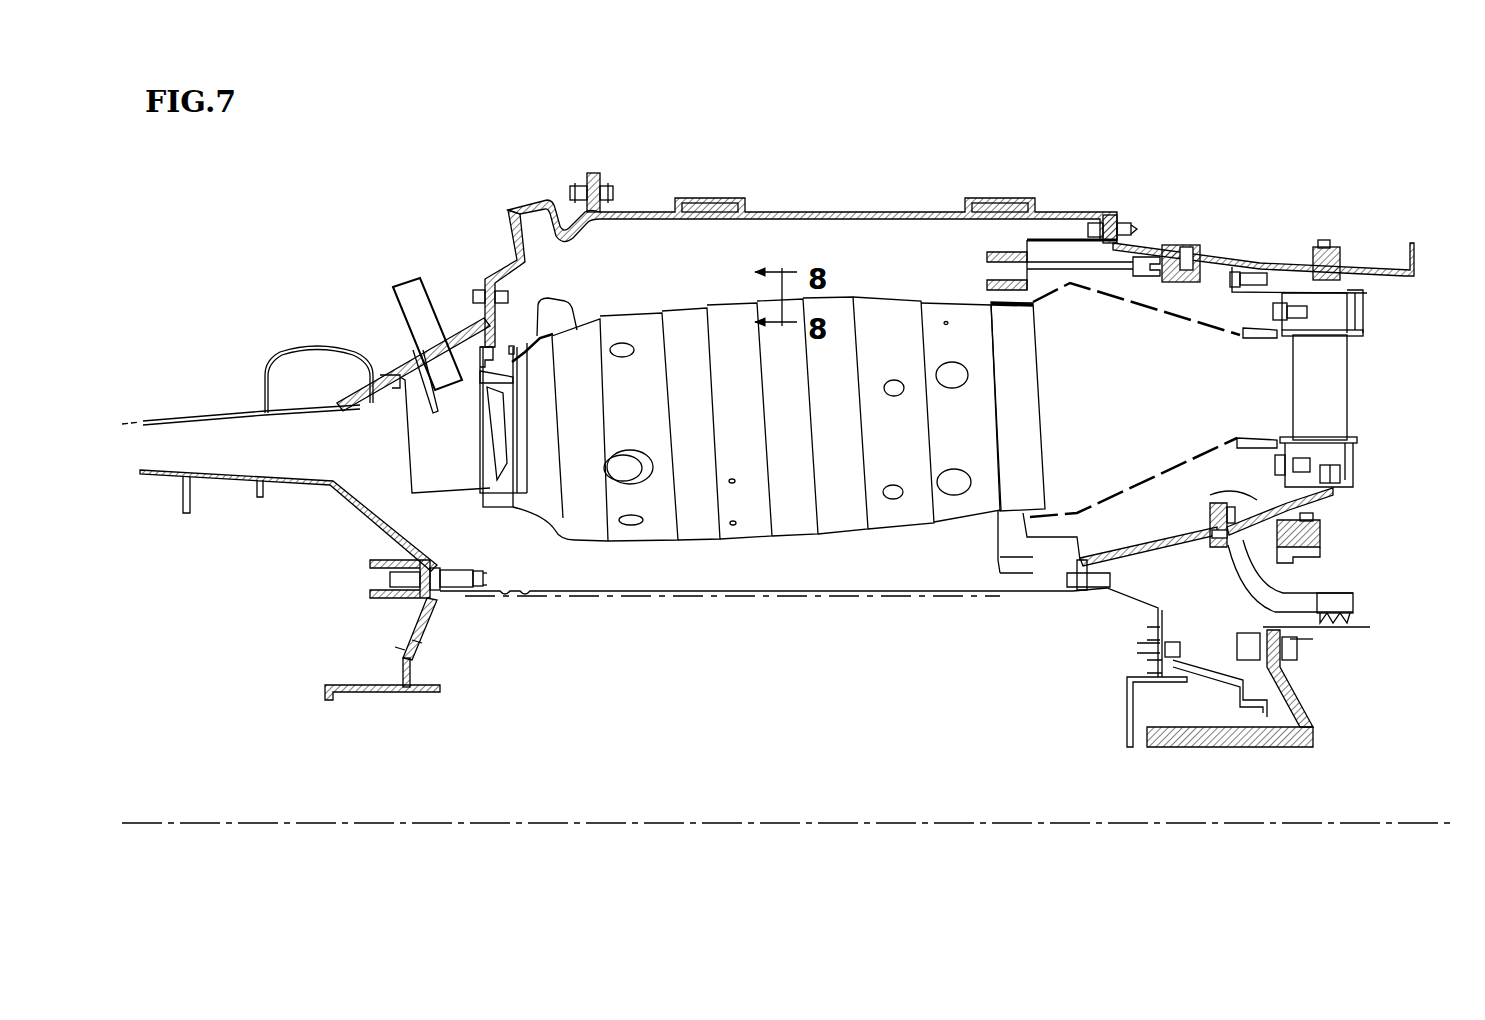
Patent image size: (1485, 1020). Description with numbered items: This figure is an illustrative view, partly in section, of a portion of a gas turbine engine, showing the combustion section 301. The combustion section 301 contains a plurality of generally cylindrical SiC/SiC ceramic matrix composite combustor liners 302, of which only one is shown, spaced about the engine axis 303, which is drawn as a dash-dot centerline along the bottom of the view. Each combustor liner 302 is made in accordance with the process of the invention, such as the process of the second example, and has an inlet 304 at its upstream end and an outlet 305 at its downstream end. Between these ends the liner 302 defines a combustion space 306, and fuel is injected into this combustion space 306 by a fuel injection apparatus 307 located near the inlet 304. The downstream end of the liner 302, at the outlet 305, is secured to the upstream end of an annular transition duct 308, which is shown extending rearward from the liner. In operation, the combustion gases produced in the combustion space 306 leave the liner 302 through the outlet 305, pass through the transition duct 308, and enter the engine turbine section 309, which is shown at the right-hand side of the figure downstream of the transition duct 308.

The combustion section 301 is at (288, 250).
The combustor liner 302 is at (620, 308).
The engine axis 303 is at (955, 823).
The inlet 304 is at (512, 441).
The outlet 305 is at (1040, 365).
The combustion space 306 is at (876, 320).
The fuel injection apparatus 307 is at (431, 283).
The transition duct 308 is at (1163, 312).
The turbine section 309 is at (1352, 408).